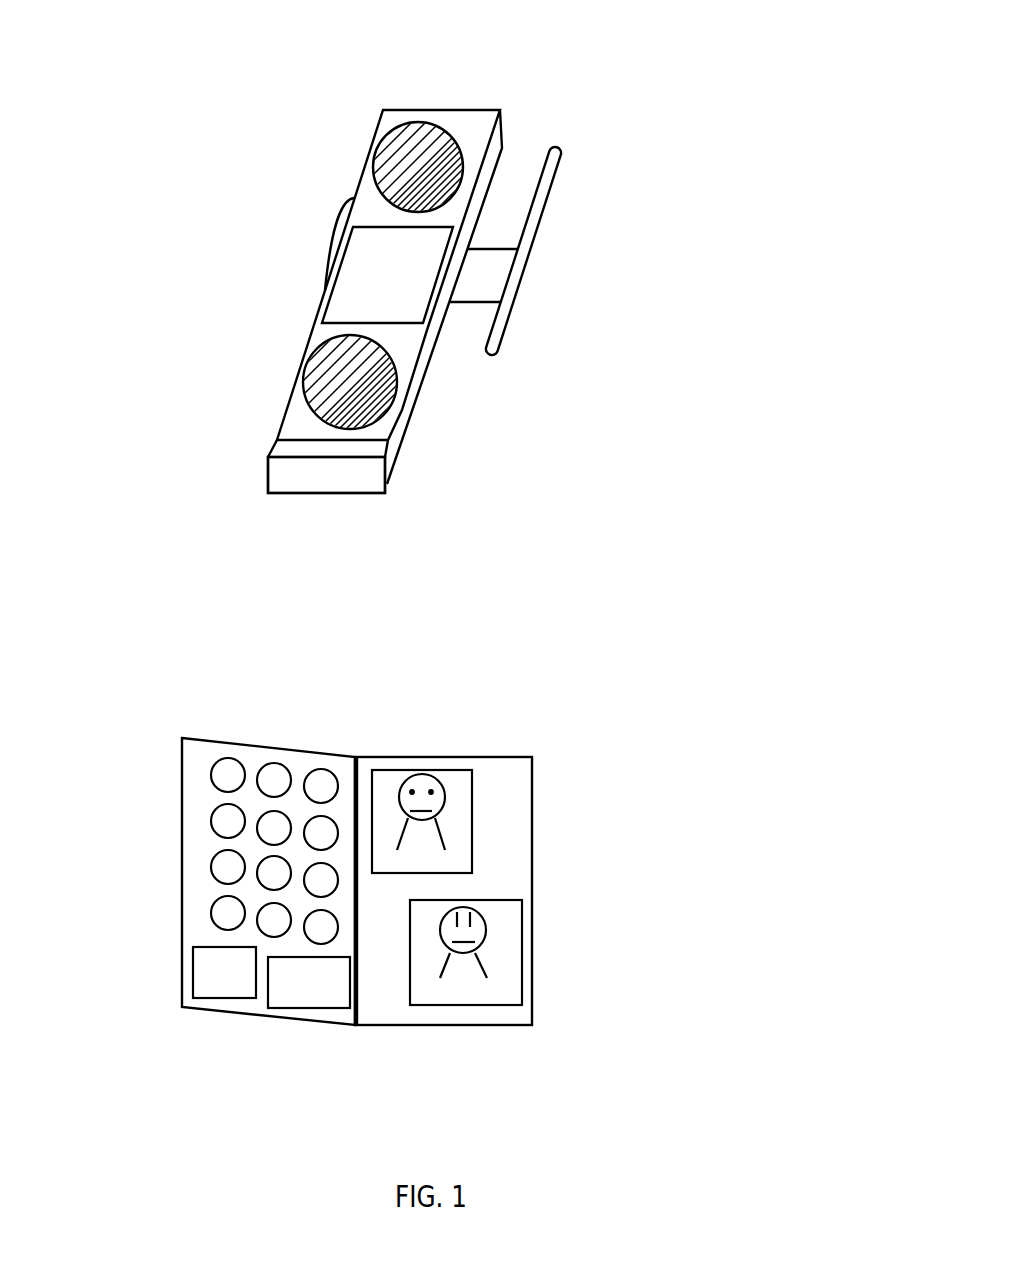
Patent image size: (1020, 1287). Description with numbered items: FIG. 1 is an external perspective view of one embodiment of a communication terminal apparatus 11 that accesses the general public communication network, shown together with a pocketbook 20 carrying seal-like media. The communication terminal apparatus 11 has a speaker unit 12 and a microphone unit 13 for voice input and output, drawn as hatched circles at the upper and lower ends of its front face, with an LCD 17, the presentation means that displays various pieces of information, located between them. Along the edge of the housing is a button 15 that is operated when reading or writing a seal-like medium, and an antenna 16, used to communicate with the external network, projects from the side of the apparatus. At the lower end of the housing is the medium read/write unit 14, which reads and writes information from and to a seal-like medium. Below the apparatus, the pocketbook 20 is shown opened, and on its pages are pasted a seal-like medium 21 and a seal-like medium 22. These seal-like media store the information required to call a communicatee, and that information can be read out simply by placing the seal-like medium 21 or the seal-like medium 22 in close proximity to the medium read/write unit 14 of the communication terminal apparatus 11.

The communication terminal apparatus 11 is at (323, 505).
The speaker unit 12 is at (433, 128).
The microphone unit 13 is at (321, 374).
The medium read/write unit 14 is at (375, 472).
The button 15 is at (324, 260).
The antenna 16 is at (498, 352).
The LCD 17 is at (362, 241).
The pocketbook 20 is at (280, 1012).
The seal-like medium 21 is at (252, 754).
The seal-like medium 22 is at (413, 770).